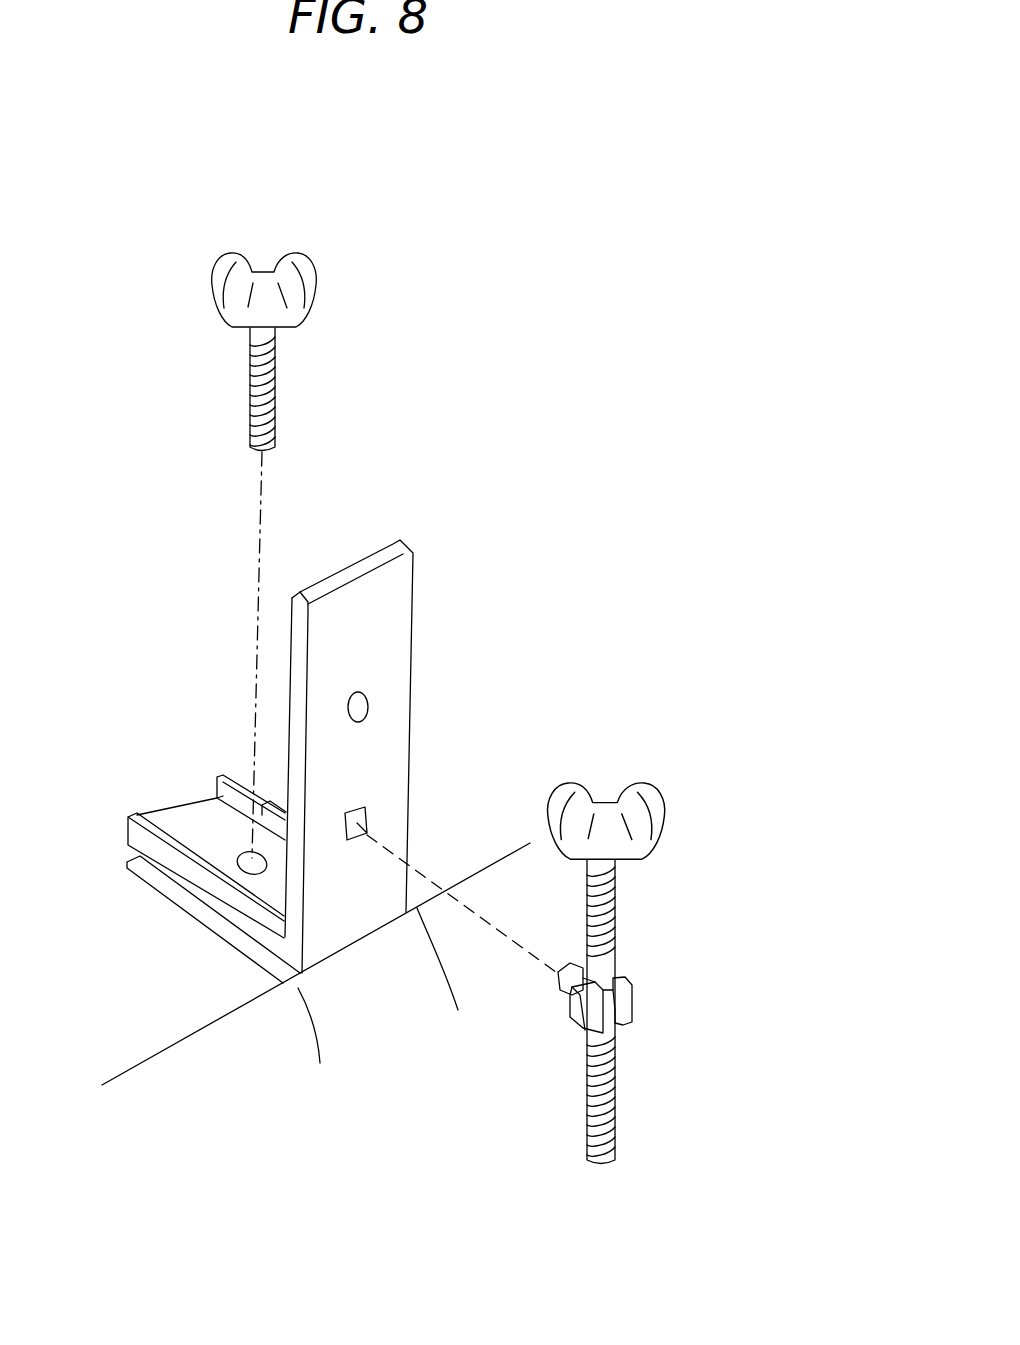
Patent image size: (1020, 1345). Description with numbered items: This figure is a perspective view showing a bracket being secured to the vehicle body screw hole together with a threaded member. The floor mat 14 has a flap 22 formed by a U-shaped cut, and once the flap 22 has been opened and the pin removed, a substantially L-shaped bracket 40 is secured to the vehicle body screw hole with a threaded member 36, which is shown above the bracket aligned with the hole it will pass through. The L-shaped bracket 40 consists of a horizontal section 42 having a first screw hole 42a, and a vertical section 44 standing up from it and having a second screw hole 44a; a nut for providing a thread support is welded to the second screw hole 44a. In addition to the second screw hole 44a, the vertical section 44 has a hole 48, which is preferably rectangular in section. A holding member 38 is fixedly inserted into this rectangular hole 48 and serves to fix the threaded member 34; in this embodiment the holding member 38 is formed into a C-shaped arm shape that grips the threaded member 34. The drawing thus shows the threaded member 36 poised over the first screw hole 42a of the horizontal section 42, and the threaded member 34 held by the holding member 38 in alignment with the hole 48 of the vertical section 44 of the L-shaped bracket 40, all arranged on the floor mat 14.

The floor mat 14 is at (486, 813).
The flap 22 is at (362, 1013).
The threaded member 34 is at (618, 905).
The threaded member 36 is at (278, 373).
The holding member 38 is at (632, 1003).
The L-shaped bracket 40 is at (433, 549).
The horizontal section 42 is at (188, 826).
The first screw hole 42a is at (242, 853).
The vertical section 44 is at (430, 773).
The second screw hole 44a is at (366, 706).
The hole 48 is at (352, 841).